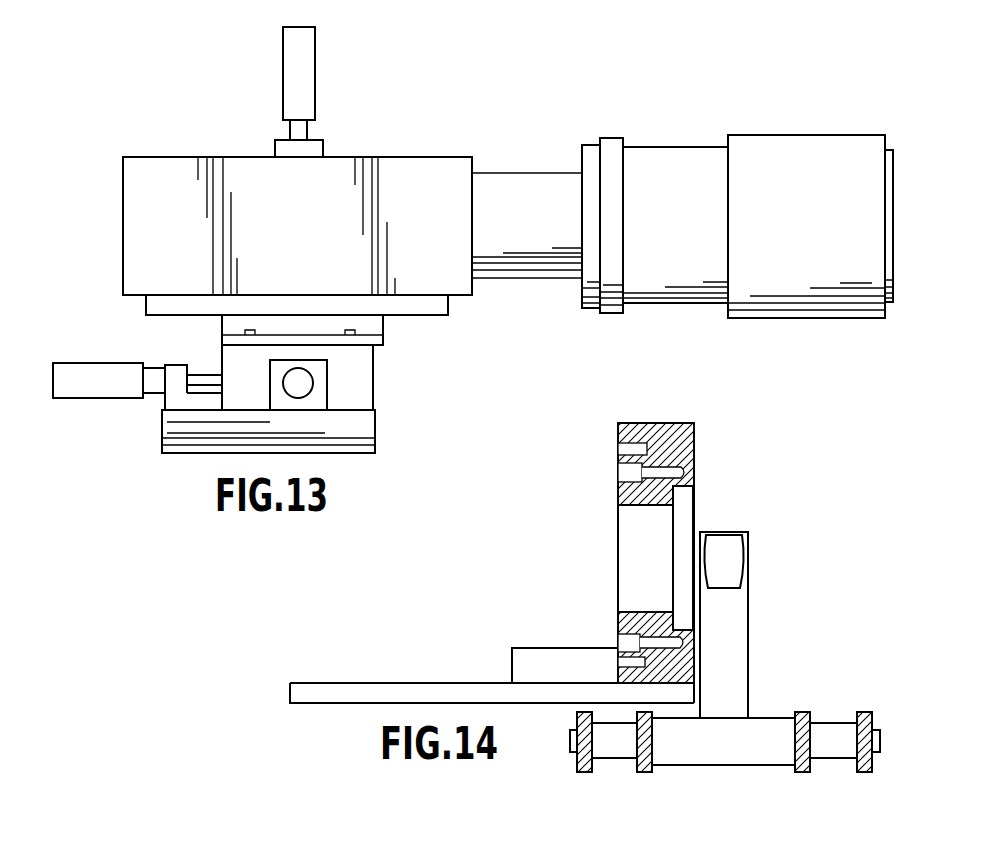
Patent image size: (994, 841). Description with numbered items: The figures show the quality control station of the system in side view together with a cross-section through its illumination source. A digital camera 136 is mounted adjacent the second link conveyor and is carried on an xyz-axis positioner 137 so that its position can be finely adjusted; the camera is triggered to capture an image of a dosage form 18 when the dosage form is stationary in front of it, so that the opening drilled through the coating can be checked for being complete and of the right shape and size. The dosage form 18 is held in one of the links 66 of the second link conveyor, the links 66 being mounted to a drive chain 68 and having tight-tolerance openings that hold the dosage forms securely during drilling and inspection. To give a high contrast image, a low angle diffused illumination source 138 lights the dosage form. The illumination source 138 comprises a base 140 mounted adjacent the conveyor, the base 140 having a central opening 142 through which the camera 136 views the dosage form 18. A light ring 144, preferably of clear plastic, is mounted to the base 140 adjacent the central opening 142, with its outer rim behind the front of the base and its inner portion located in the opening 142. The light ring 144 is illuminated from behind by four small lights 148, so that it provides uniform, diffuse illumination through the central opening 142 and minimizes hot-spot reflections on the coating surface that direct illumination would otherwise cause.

In FIG. 13, the digital camera 136 is at (404, 157).
In FIG. 13, the xyz-axis positioner 137 is at (375, 433).
In FIG. 14, the illumination source 138 is at (704, 432).
In FIG. 14, the small lights 148 is at (622, 472).
In FIG. 14, the light ring 144 is at (687, 500).
In FIG. 14, the central opening 142 is at (648, 566).
In FIG. 14, the base 140 is at (560, 657).
In FIG. 14, the dosage form 18 is at (737, 562).
In FIG. 14, the links 66 is at (738, 645).
In FIG. 14, the drive chain 68 is at (800, 772).